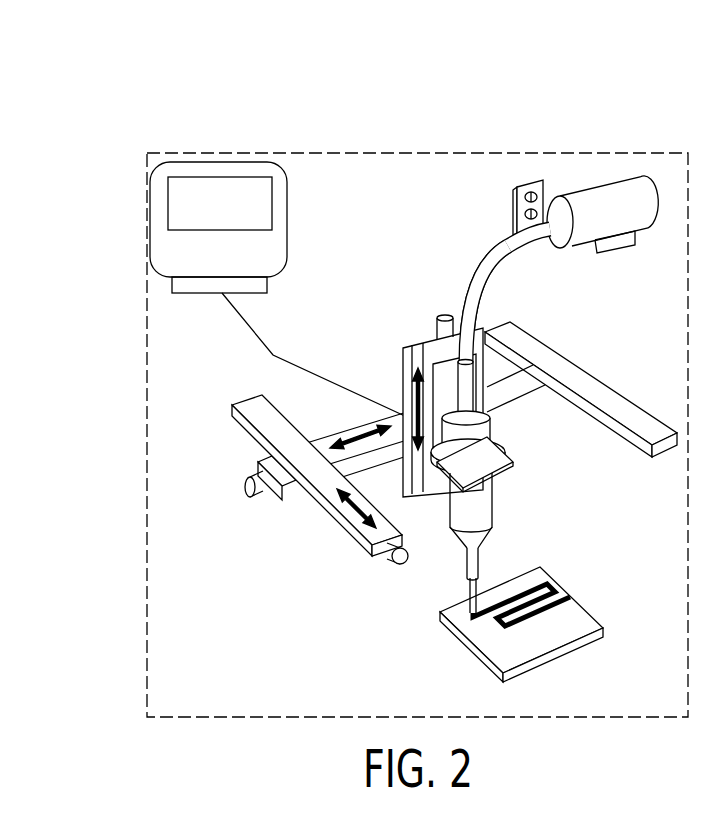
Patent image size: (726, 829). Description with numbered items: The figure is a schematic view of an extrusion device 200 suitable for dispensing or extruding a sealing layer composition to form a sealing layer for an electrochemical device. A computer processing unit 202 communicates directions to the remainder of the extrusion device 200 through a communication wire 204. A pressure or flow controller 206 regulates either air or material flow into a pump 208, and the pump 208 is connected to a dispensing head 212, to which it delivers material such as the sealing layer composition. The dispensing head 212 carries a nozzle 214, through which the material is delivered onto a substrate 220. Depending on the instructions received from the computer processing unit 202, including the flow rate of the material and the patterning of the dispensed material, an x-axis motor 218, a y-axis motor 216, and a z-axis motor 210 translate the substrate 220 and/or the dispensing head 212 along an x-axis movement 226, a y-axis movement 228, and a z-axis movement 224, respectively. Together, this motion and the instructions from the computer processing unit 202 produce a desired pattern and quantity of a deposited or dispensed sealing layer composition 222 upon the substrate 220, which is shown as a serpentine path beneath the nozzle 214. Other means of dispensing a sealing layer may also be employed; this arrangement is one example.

The extrusion device 200 is at (116, 111).
The computer processing unit 202 is at (178, 203).
The communication wire 204 is at (253, 323).
The pressure or flow controller 206 is at (515, 218).
The pump 208 is at (582, 232).
The z-axis motor 210 is at (437, 323).
The dispensing head 212 is at (485, 497).
The nozzle 214 is at (478, 553).
The y-axis motor 216 is at (393, 558).
The x-axis motor 218 is at (247, 487).
The substrate 220 is at (590, 625).
The dispensed sealing layer composition 222 is at (480, 625).
The z-axis movement 224 is at (405, 408).
The x-axis movement 226 is at (357, 438).
The y-axis movement 228 is at (353, 508).